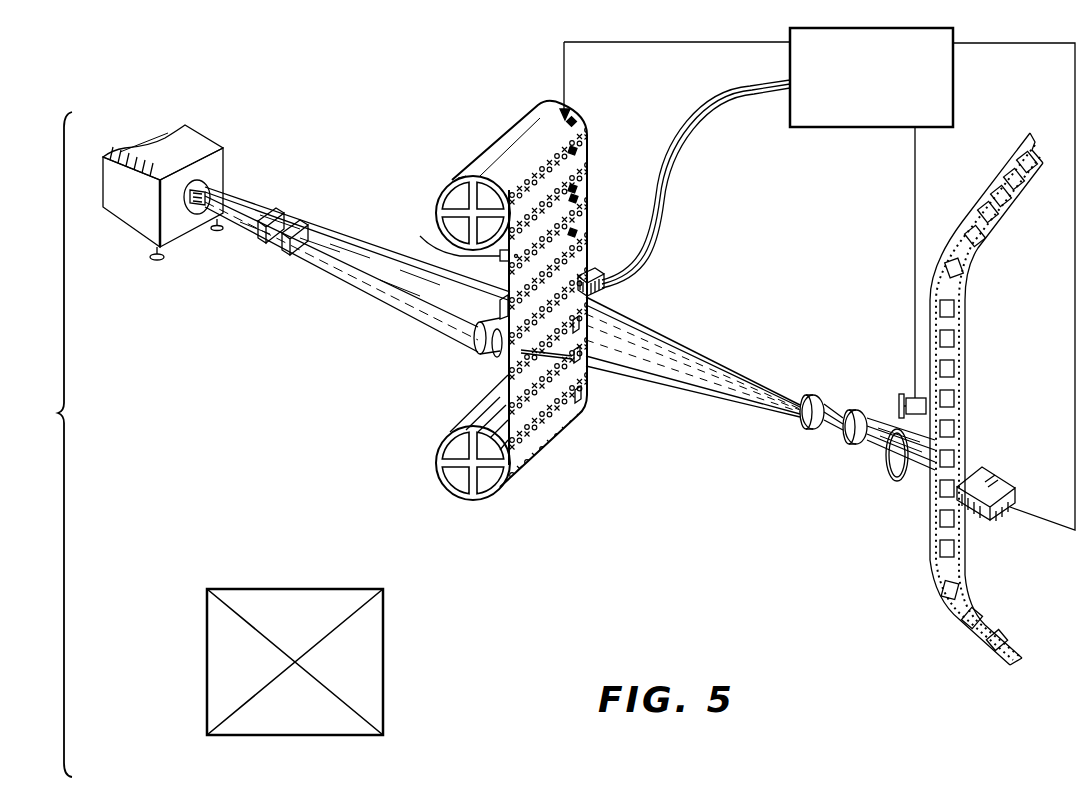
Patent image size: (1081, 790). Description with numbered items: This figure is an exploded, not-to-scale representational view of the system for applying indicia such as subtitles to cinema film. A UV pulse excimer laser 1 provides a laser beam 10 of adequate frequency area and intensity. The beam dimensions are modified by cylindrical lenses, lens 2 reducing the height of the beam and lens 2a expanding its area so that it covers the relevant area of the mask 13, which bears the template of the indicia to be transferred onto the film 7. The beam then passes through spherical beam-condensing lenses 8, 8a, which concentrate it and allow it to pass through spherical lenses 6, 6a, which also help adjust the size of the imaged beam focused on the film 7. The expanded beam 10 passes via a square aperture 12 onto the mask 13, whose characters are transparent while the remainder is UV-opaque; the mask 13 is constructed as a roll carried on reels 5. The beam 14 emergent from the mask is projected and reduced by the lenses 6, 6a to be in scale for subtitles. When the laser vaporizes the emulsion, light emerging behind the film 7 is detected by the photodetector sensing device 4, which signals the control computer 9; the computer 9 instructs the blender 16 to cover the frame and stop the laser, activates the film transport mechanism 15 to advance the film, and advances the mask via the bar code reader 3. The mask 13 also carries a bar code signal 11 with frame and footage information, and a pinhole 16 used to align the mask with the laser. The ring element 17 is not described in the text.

The UV pulse (excimer) laser 1 is at (212, 106).
The cylindrical lens 2 is at (280, 212).
The cylindrical lens 2a is at (304, 222).
The bar code reader 3 is at (606, 290).
The sensing device (photodetector) 4 is at (1000, 468).
The reels 5 is at (440, 198).
The spherical lens 6 is at (803, 420).
The spherical lens 6a is at (846, 440).
The film 7 is at (968, 411).
The spherical (beam-condensing) lens 8 is at (476, 344).
The spherical (beam-condensing) lens 8a is at (497, 357).
The control computer 9 is at (953, 62).
The laser beam 10 is at (392, 310).
The bar code signal 11 is at (588, 180).
The square aperture 12 is at (519, 355).
The mask 13 is at (588, 201).
The beam emergent from the mask 14 is at (653, 353).
The film transport mechanism 15 is at (897, 406).
The blender 16 is at (458, 244).
The ring aperture 17 is at (893, 480).